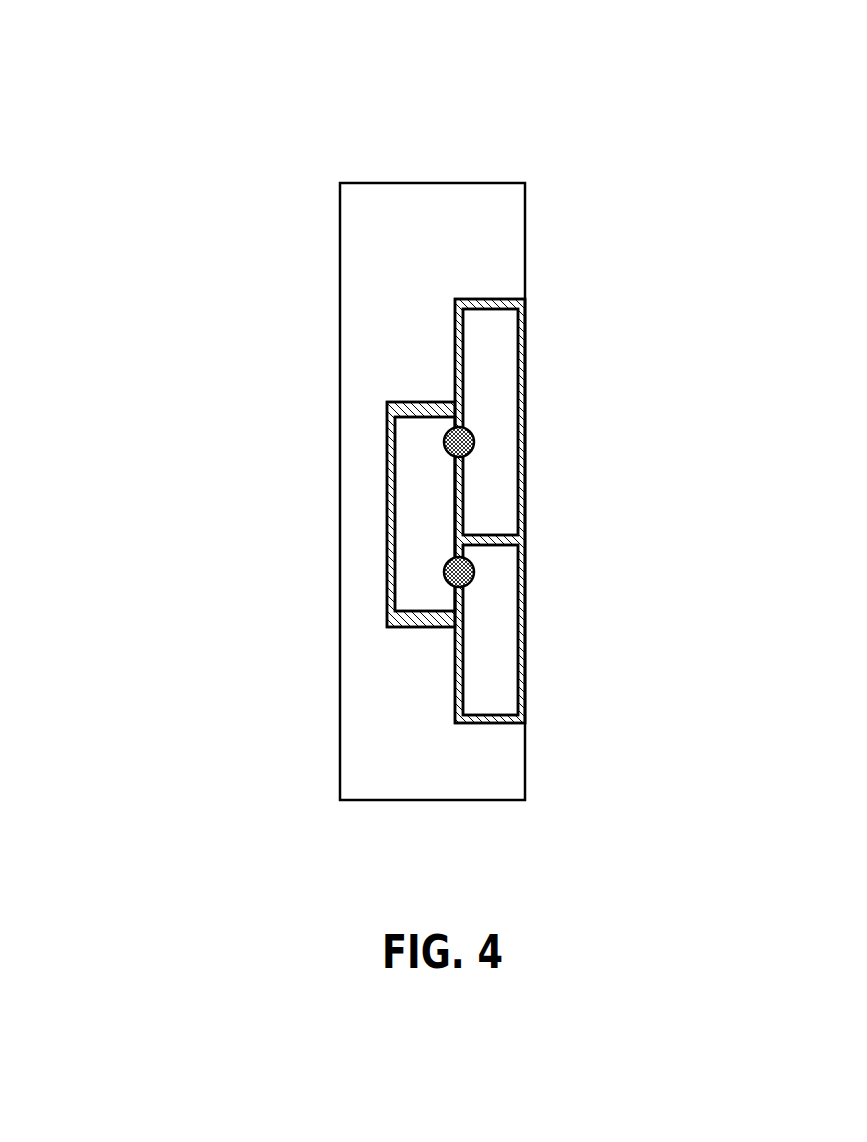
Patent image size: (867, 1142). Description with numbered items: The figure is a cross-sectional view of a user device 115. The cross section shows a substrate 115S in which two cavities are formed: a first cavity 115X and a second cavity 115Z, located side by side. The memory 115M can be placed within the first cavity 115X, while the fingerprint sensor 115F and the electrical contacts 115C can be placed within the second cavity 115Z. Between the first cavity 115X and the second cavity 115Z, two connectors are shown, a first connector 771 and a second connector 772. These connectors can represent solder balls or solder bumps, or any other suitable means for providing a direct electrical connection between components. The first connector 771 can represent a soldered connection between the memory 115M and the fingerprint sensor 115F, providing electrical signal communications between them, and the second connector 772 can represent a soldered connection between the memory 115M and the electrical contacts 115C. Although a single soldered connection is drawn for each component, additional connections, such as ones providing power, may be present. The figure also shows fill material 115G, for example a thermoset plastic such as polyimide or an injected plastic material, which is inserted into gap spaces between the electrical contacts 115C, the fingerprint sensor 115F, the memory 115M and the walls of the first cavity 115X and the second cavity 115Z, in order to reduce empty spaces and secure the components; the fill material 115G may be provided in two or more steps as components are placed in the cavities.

The user device 115 is at (208, 118).
The substrate 115S is at (360, 275).
The fill material 115G is at (423, 395).
The first cavity 115X is at (455, 697).
The second cavity 115Z is at (393, 615).
The fingerprint sensor 115F is at (500, 400).
The memory 115M is at (437, 518).
The electrical contacts 115C is at (500, 658).
The first connector 771 is at (444, 442).
The second connector 772 is at (444, 570).